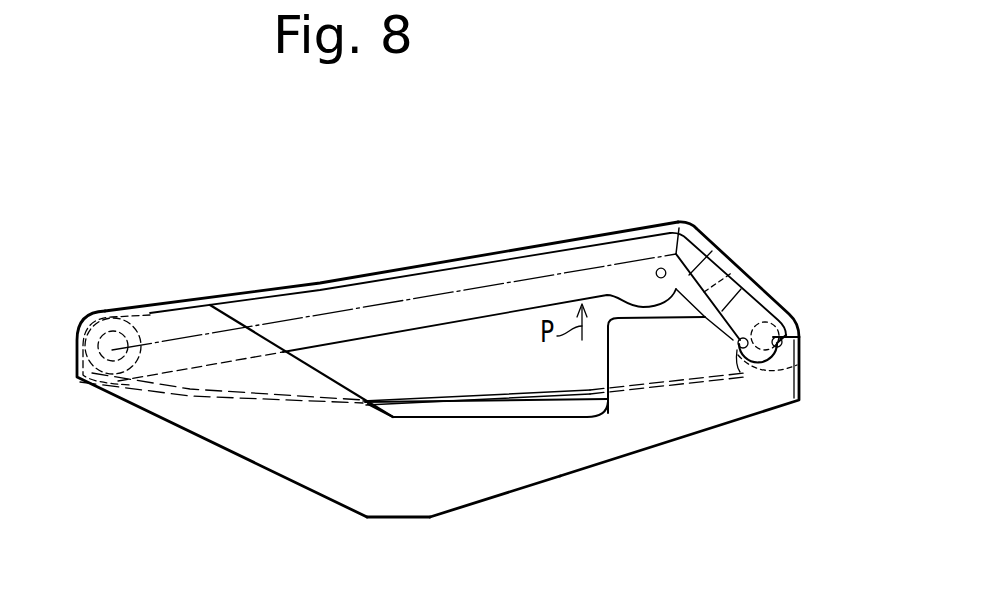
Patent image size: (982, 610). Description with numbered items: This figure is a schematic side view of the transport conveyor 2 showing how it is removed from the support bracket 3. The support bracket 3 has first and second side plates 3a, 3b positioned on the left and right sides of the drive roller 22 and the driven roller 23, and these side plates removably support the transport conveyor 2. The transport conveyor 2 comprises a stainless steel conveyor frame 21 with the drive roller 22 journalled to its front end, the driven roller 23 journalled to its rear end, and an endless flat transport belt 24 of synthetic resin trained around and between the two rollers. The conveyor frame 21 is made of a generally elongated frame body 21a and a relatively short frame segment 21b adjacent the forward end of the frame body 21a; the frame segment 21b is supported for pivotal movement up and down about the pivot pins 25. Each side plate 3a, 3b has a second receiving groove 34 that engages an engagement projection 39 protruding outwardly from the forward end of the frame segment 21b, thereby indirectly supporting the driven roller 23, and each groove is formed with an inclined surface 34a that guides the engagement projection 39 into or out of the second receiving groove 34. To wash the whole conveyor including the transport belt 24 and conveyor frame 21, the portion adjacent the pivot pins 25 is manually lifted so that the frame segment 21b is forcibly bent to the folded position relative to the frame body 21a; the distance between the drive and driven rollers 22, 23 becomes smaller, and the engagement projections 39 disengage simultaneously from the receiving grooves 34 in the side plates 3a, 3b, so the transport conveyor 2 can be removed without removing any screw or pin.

The transport conveyor 2 is at (414, 262).
The support bracket 3 is at (563, 475).
The first side plate 3a is at (398, 508).
The second side plate 3b is at (450, 497).
The conveyor frame 21 is at (776, 142).
The frame body 21a is at (617, 243).
The frame segment 21b is at (731, 256).
The drive roller 22 is at (137, 338).
The driven roller 23 is at (775, 291).
The transport belt 24 is at (513, 246).
The pivot pins 25 is at (665, 268).
The second receiving groove 34 is at (778, 347).
The inclined surface 34a is at (720, 292).
The engagement projection 39 is at (741, 350).